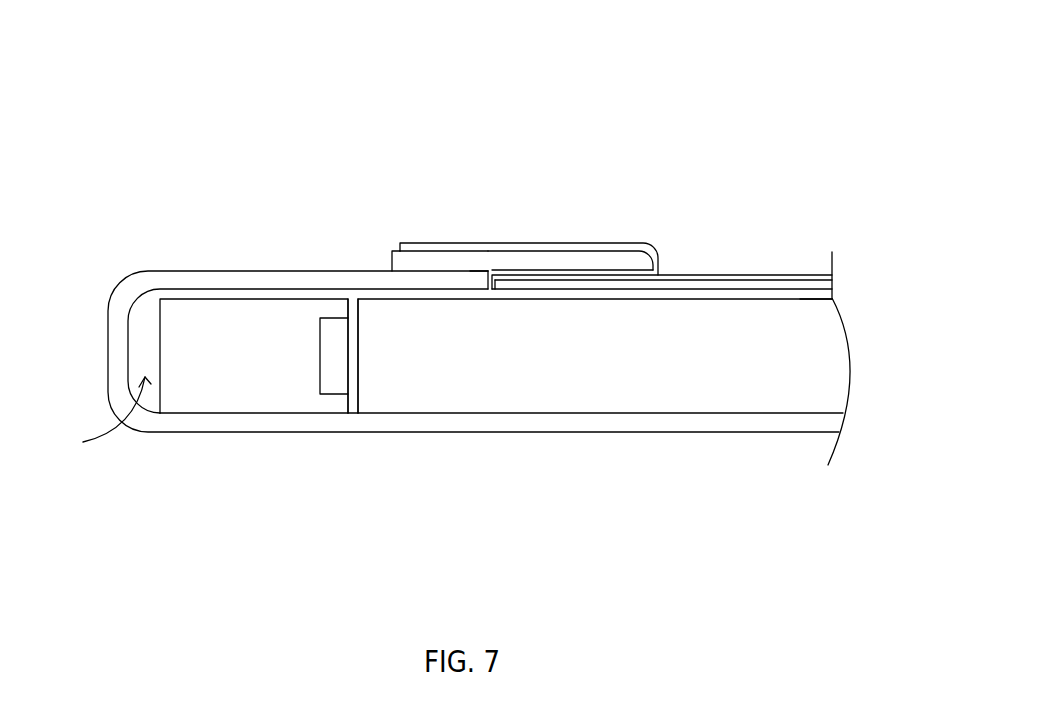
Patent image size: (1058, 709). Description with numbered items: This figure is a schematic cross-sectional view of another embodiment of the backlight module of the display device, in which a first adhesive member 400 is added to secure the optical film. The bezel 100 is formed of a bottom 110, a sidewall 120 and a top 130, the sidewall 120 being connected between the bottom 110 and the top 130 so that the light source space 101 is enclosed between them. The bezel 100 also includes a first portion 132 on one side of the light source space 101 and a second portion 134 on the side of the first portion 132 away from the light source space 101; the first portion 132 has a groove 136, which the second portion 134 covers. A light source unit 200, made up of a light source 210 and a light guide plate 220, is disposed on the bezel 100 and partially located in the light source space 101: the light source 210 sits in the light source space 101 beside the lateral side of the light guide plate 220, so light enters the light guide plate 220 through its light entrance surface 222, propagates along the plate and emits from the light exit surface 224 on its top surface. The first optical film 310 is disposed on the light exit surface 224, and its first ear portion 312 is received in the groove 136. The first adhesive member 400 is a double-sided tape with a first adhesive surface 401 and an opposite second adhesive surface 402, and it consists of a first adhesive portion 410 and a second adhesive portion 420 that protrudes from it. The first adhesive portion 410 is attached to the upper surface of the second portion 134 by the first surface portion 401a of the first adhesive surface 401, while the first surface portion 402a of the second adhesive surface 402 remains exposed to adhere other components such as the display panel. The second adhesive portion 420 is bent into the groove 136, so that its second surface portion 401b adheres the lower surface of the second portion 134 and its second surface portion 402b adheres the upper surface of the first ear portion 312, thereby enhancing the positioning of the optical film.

The bezel 100 is at (165, 275).
The light source space 101 is at (93, 417).
The bottom 110 is at (683, 433).
The sidewall 120 is at (117, 335).
The top 130 is at (425, 210).
The first portion 132 is at (407, 277).
The second portion 134 is at (438, 262).
The groove 136 is at (494, 268).
The light source unit 200 is at (527, 368).
The light source 210 is at (272, 392).
The light guide plate 220 is at (420, 392).
The light entrance surface 222 is at (357, 302).
The light exit surface 224 is at (818, 295).
The first optical film 310 is at (785, 282).
The first ear portion 312 is at (497, 272).
The first adhesive member 400 is at (584, 192).
The first adhesive surface 401 is at (664, 190).
The first surface portion of the first adhesive surface 401a is at (585, 270).
The second surface portion of the first adhesive surface 401b is at (603, 270).
The second adhesive surface 402 is at (548, 198).
The first surface portion of the second adhesive surface 402a is at (561, 270).
The second surface portion of the second adhesive surface 402b is at (572, 251).
The first adhesive portion 410 is at (612, 251).
The second adhesive portion 420 is at (631, 250).